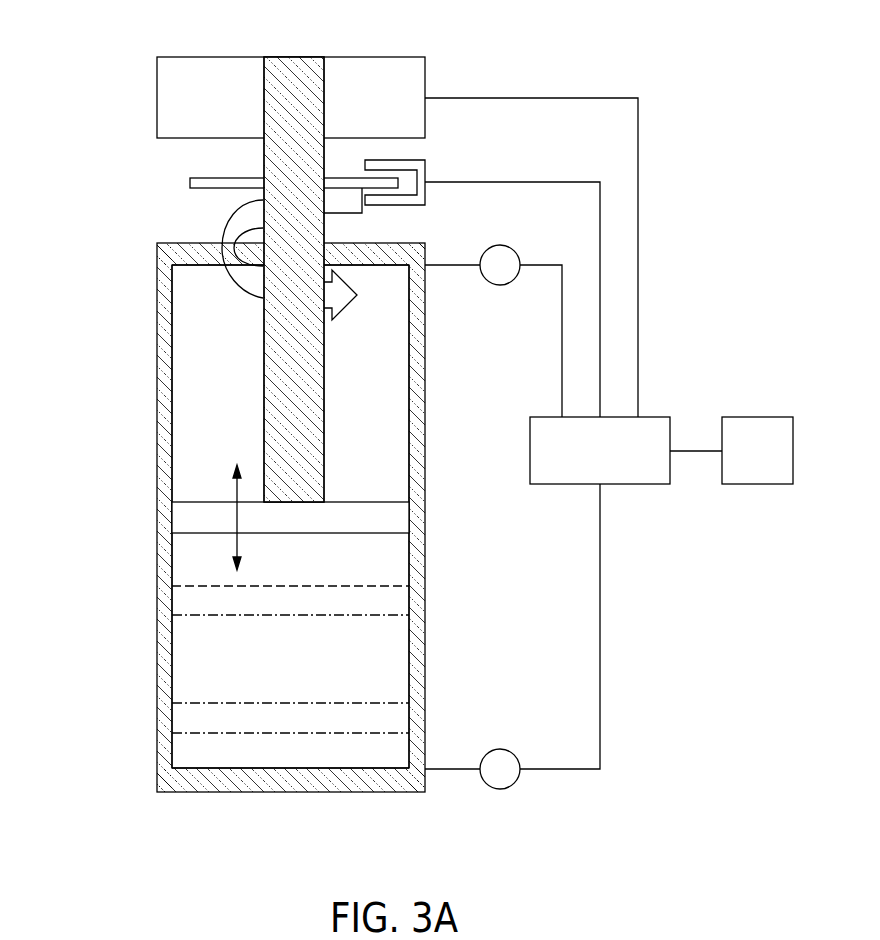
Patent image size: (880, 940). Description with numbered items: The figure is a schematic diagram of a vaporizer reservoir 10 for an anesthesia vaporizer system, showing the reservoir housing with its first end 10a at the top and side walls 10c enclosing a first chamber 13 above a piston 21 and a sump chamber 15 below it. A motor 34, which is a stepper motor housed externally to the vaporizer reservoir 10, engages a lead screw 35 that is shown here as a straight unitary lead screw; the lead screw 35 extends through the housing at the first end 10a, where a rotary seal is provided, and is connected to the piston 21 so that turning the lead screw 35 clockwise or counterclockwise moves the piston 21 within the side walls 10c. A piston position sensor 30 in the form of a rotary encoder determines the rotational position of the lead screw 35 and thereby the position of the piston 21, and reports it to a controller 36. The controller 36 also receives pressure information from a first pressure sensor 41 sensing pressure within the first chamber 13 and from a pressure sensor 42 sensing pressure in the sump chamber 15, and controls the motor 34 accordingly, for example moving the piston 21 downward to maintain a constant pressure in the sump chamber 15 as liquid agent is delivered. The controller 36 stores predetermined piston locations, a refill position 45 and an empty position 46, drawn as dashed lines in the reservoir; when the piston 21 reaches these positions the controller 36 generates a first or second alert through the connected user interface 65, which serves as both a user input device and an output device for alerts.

The vaporizer reservoir 10 is at (73, 288).
The first end 10a is at (170, 242).
The side walls 10c is at (155, 420).
The first chamber 13 is at (190, 325).
The sump chamber 15 is at (190, 748).
The piston 21 is at (390, 520).
The piston position sensor 30 is at (409, 214).
The motor 34 is at (212, 64).
The lead screw 35 is at (263, 147).
The controller 36 is at (642, 485).
The first pressure sensor 41 is at (500, 285).
The pressure sensor 42 is at (500, 789).
The refill position 45 is at (375, 613).
The empty position 46 is at (363, 733).
The user interface 65 is at (757, 485).